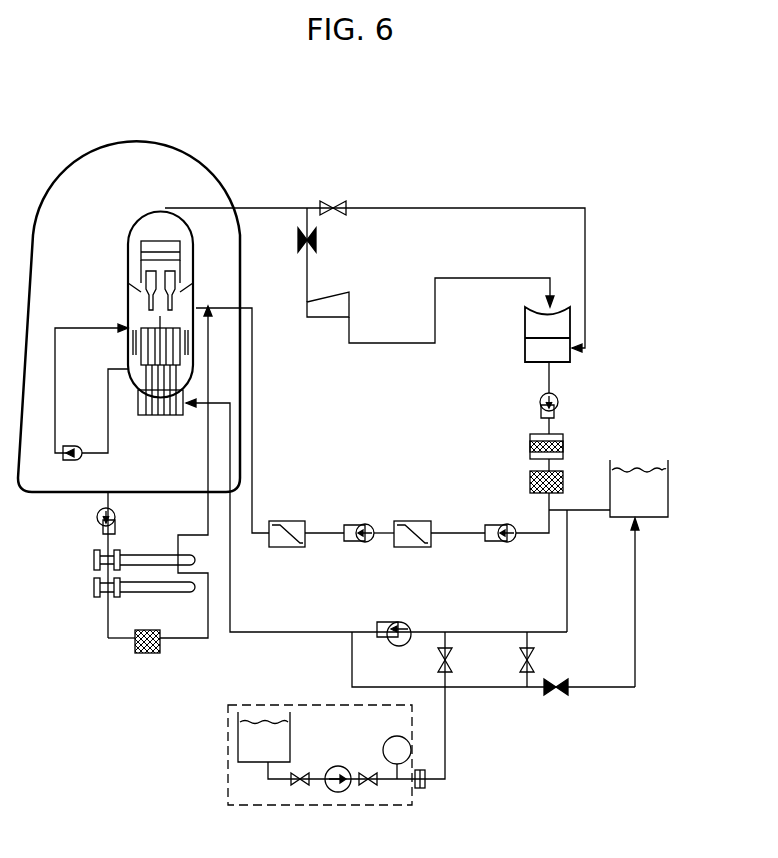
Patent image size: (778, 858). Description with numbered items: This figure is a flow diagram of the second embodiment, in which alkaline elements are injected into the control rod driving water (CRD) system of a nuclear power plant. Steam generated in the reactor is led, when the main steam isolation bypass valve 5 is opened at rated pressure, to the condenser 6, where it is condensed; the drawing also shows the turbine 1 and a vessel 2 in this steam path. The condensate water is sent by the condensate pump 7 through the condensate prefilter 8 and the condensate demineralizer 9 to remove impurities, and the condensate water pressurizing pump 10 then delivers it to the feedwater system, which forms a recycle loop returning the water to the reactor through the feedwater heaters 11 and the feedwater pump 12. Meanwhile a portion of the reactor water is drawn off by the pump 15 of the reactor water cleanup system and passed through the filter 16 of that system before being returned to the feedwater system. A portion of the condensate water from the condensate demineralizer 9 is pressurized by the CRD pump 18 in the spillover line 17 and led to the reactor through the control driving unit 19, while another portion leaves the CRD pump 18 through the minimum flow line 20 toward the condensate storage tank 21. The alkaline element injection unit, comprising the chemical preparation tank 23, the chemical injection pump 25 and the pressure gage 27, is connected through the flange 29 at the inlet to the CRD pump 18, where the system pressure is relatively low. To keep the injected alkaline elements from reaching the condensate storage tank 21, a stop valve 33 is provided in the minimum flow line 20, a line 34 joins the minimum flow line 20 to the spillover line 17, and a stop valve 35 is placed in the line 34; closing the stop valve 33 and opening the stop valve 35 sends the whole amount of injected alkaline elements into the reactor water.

The turbine 1 is at (346, 292).
The condenser 2 is at (525, 325).
The main steam isolation bypass valve 5 is at (336, 200).
The condenser 6 is at (525, 357).
The condensate pump 7 is at (540, 410).
The condensate prefilter 8 is at (530, 450).
The condensate demineralizer 9 is at (530, 485).
The condensate water pressurizing pump 10 is at (505, 548).
The feedwater heaters 11 is at (411, 521).
The feedwater pump 12 is at (365, 548).
The pump of reactor water cleanup system 15 is at (98, 522).
The filter of reactor water cleanup system 16 is at (150, 655).
The spillover line 17 is at (568, 578).
The control rod driving water (CRD) pump 18 is at (392, 646).
The control driving unit 19 is at (168, 415).
The minimum flow line 20 is at (492, 690).
The condensate storage tank 21 is at (668, 487).
The chemical preparation tank 23 is at (290, 728).
The chemical injection pump 25 is at (343, 767).
The pressure gage 27 is at (392, 737).
The flange 29 is at (421, 790).
The stop valve 33 is at (555, 697).
The line 34 is at (527, 633).
The stop valve 35 is at (534, 661).